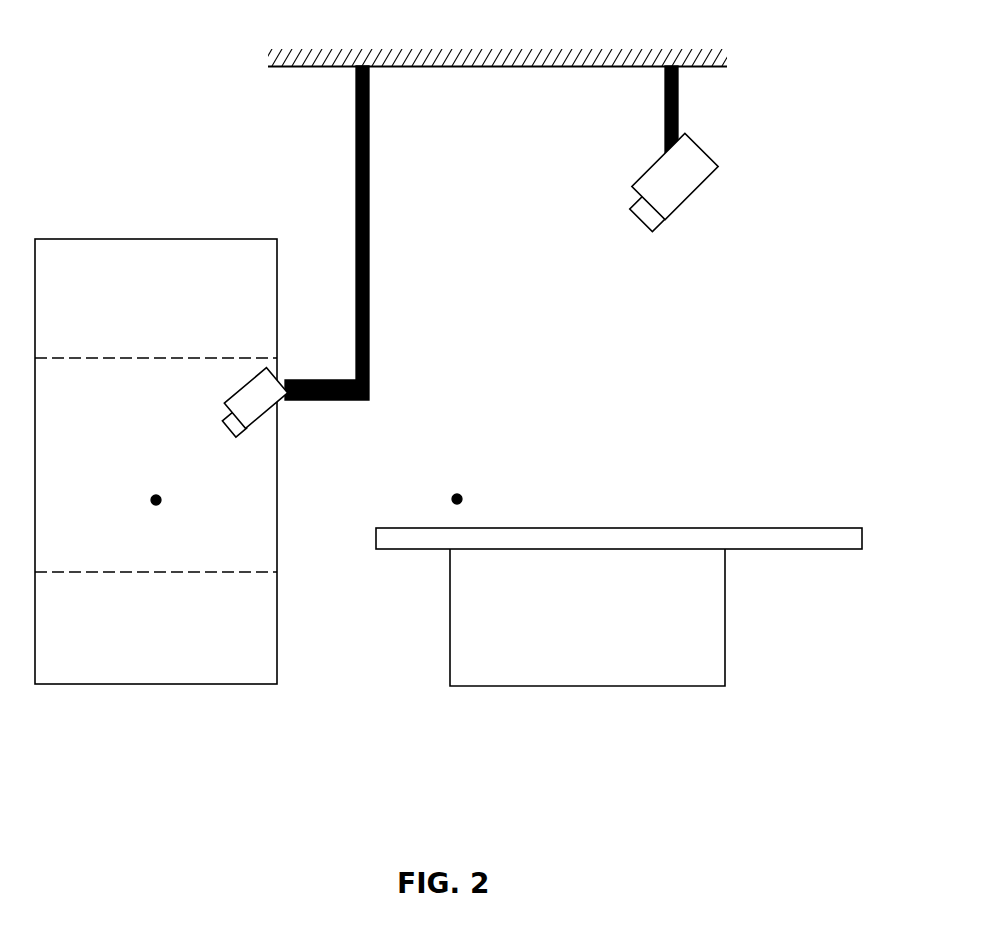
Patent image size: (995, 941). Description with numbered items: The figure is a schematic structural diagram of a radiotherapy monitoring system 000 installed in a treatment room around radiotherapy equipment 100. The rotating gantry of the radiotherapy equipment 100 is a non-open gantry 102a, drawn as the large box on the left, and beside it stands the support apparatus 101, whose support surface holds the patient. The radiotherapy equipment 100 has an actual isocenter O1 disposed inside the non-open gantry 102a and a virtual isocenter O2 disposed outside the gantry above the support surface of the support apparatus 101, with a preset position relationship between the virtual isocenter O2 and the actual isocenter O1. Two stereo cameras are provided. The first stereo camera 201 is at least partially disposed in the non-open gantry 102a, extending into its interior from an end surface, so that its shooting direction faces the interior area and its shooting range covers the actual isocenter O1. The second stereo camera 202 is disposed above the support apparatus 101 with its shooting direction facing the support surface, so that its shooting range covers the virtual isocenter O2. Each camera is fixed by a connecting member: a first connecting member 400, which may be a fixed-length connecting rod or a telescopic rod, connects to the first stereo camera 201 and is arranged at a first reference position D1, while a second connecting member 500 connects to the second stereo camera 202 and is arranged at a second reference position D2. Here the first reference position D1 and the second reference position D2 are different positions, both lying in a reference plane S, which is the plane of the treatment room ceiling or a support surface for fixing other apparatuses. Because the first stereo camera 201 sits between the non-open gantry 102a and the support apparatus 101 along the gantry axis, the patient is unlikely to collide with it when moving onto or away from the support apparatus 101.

The radiotherapy monitoring system 000 is at (74, 35).
The reference plane S is at (461, 80).
The first reference position D1 is at (340, 41).
The second reference position D2 is at (646, 42).
The radiotherapy equipment 100 is at (231, 762).
The support apparatus 101 is at (483, 651).
The non-open gantry 102a is at (231, 652).
The first stereo camera 201 is at (259, 401).
The second stereo camera 202 is at (679, 191).
The first connecting member 400 is at (371, 143).
The second connecting member 500 is at (680, 113).
The actual isocenter O1 is at (156, 480).
The virtual isocenter O2 is at (457, 484).